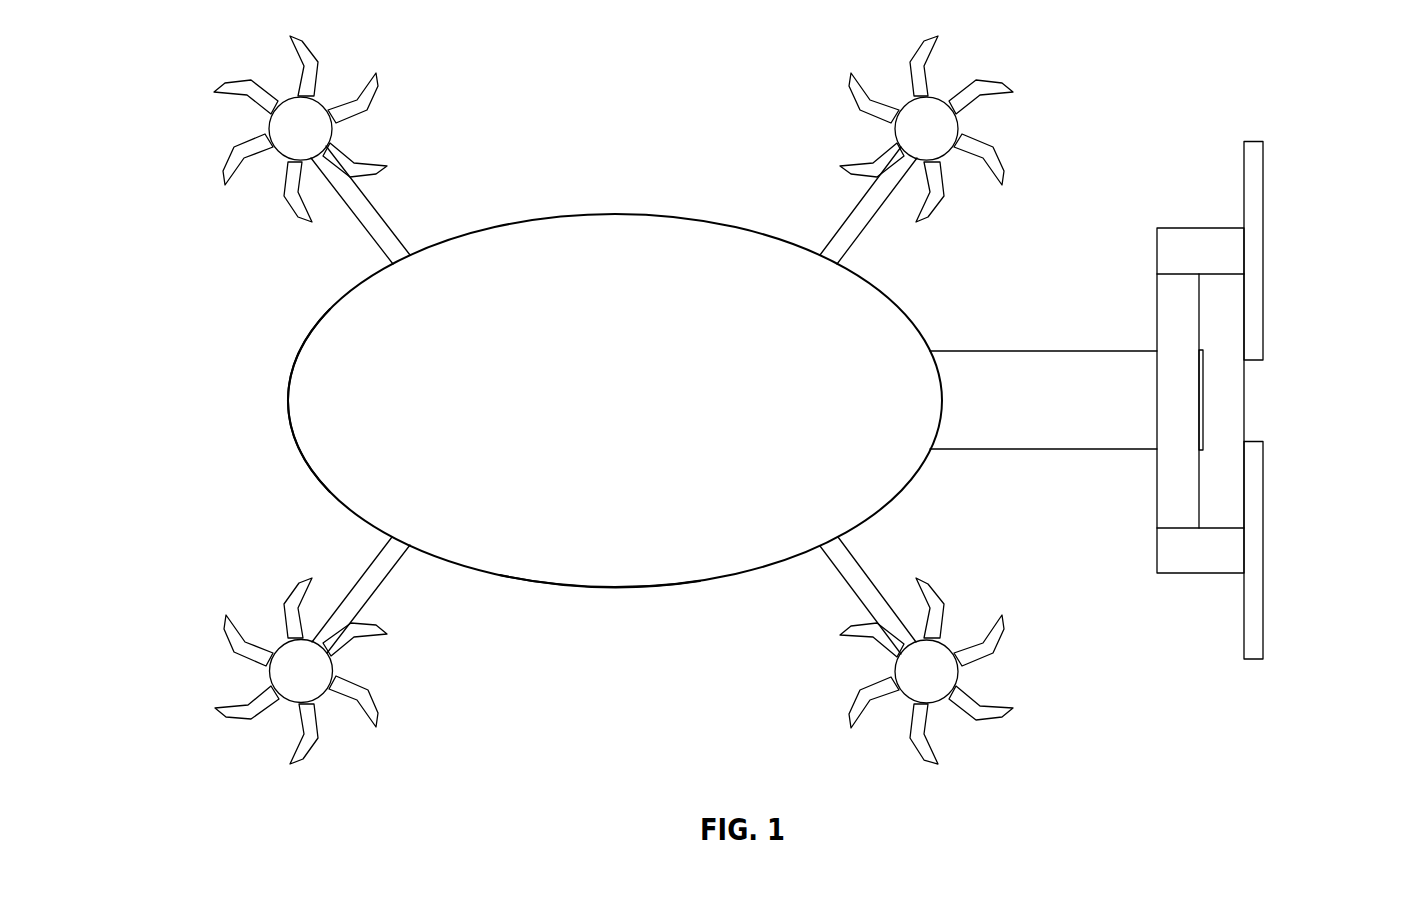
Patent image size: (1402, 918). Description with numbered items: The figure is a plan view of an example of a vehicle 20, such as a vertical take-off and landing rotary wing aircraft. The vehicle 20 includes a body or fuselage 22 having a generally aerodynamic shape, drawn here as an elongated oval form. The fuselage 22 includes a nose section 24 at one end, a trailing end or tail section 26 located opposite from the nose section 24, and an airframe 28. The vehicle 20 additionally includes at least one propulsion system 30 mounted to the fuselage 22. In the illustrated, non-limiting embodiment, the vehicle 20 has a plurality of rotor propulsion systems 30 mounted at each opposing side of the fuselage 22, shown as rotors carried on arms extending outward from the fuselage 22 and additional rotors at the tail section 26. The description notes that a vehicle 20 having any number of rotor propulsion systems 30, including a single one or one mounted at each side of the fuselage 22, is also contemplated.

The vehicle 20 is at (472, 82).
The fuselage 22 is at (623, 208).
The nose section 24 is at (288, 391).
The tail section 26 is at (1062, 421).
The airframe 28 is at (574, 586).
The propulsion system 30 is at (180, 152).